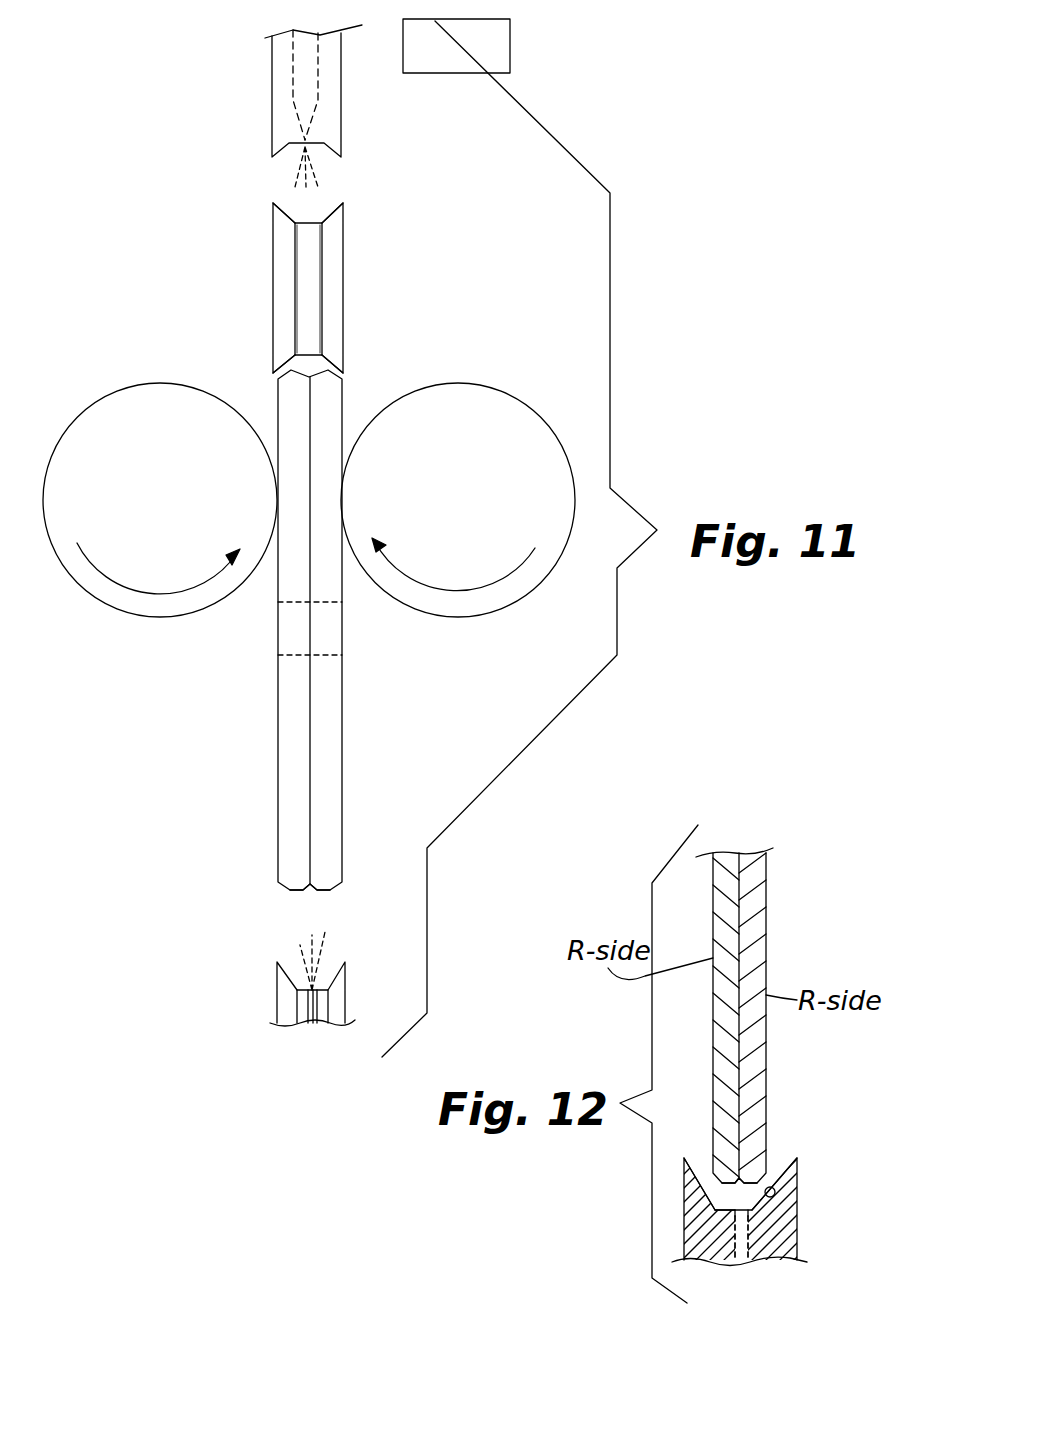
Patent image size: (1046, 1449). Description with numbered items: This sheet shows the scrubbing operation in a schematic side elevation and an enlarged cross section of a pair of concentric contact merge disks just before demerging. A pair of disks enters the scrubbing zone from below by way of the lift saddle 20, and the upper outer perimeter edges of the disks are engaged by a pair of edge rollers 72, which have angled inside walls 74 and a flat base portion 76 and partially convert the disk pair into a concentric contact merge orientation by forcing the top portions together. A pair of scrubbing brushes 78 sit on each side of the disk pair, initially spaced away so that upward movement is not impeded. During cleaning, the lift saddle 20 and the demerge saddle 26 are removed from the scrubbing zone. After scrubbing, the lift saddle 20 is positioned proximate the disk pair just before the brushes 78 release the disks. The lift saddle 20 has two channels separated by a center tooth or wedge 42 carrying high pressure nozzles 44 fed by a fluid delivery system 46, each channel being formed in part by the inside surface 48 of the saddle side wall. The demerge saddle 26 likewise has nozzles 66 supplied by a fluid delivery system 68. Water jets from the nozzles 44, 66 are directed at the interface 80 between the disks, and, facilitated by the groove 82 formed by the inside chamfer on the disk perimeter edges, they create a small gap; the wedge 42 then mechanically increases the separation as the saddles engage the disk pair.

In FIG. 11, the lift saddle 20 is at (345, 1000).
In FIG. 12, the lift saddle 20 is at (797, 1240).
In FIG. 11, the demerge saddle 26 is at (341, 110).
In FIG. 12, the center tooth or wedge 42 is at (735, 1192).
In FIG. 12, the high pressure jet openings or nozzles 44 is at (742, 1197).
In FIG. 12, the manifold or fluid delivery system 46 is at (740, 1262).
In FIG. 12, the inside surface of the saddle side wall 48 is at (695, 1172).
In FIG. 11, the high pressure jets or nozzles 66 is at (305, 118).
In FIG. 11, the fluid delivery system 68 is at (303, 63).
In FIG. 11, the edge rollers 72 is at (368, 306).
In FIG. 11, the angled inside walls 74 is at (283, 245).
In FIG. 11, the flat base portion 76 is at (310, 228).
In FIG. 11, the scrubbing brushes 78 is at (118, 407).
In FIG. 11, the interface between the disks 80 is at (312, 767).
In FIG. 12, the interface between the disks 80 is at (739, 848).
In FIG. 11, the groove 82 is at (311, 893).
In FIG. 12, the groove 82 is at (740, 1194).